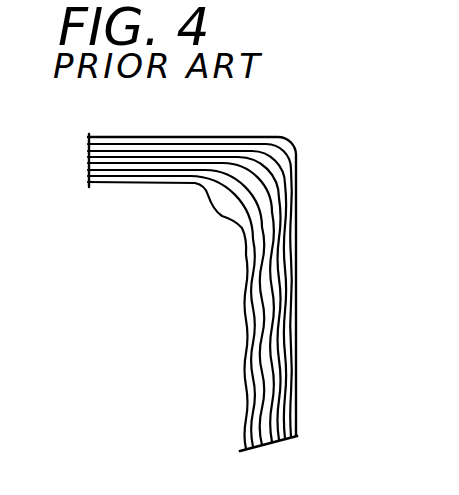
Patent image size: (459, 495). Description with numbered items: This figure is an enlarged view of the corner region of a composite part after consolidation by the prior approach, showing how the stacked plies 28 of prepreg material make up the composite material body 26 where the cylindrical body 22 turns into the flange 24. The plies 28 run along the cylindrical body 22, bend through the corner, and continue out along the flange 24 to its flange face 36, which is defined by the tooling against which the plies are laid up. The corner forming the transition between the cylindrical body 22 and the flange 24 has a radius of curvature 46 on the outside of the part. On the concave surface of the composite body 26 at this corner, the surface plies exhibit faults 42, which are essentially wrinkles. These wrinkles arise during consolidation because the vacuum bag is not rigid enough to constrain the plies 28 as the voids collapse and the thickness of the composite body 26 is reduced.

The cylindrical body 22 is at (297, 403).
The flange 24 is at (219, 137).
The composite material body 26 is at (303, 252).
The plies 28 is at (51, 160).
The flange face 36 is at (127, 135).
The faults 42 is at (206, 196).
The radius of curvature 46 is at (200, 228).